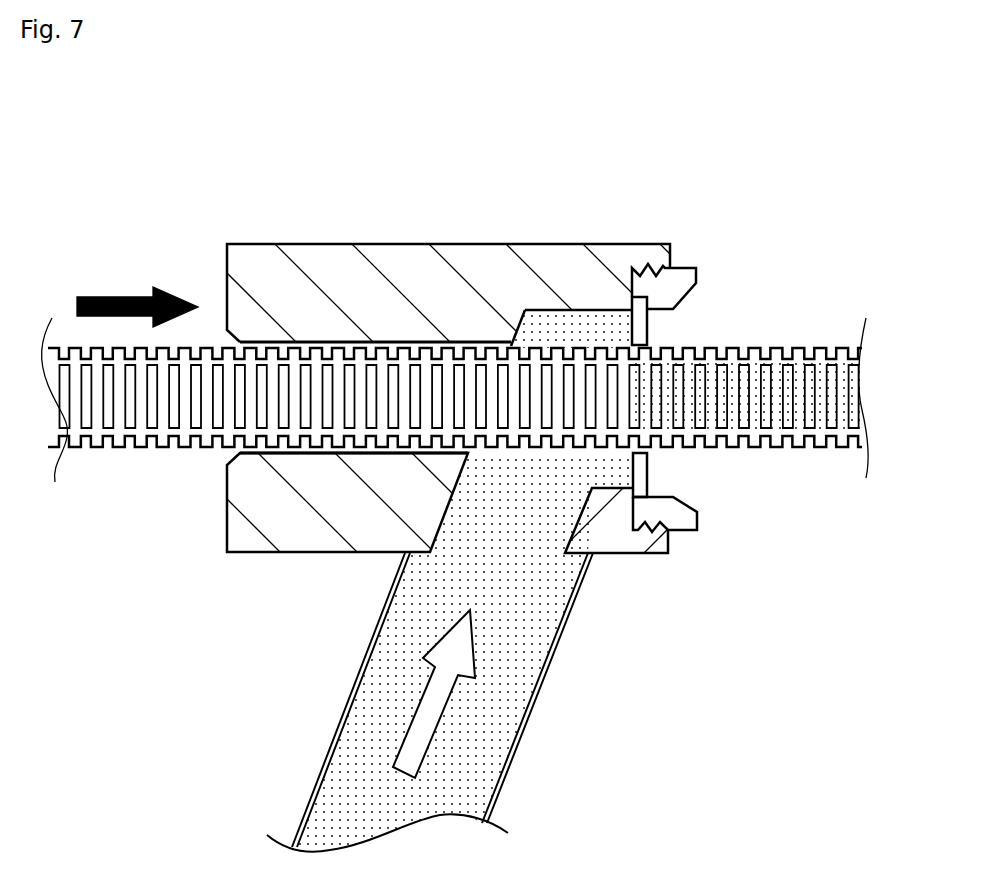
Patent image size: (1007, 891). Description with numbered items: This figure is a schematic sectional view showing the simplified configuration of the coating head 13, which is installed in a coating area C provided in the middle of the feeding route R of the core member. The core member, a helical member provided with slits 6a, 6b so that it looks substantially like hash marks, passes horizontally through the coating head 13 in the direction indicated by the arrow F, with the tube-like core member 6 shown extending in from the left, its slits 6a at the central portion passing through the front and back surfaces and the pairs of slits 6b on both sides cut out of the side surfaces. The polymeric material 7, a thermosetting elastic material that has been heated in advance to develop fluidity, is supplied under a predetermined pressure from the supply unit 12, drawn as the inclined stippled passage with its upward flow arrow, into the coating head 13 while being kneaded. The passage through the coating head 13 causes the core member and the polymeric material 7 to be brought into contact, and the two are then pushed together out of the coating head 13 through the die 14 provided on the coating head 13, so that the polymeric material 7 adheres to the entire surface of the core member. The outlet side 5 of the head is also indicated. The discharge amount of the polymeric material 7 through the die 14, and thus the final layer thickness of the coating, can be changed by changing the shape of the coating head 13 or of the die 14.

The connection portion 5 is at (767, 324).
The corrugated tube 6 is at (455, 400).
The slits 6a is at (128, 425).
The slits 6b is at (190, 437).
The polymeric material 7 is at (840, 350).
The supply unit 12 is at (273, 676).
The coating head 13 is at (405, 258).
The die 14 is at (640, 330).
The coating area C is at (250, 172).
The flow direction F is at (118, 296).
The feeding route R is at (723, 266).